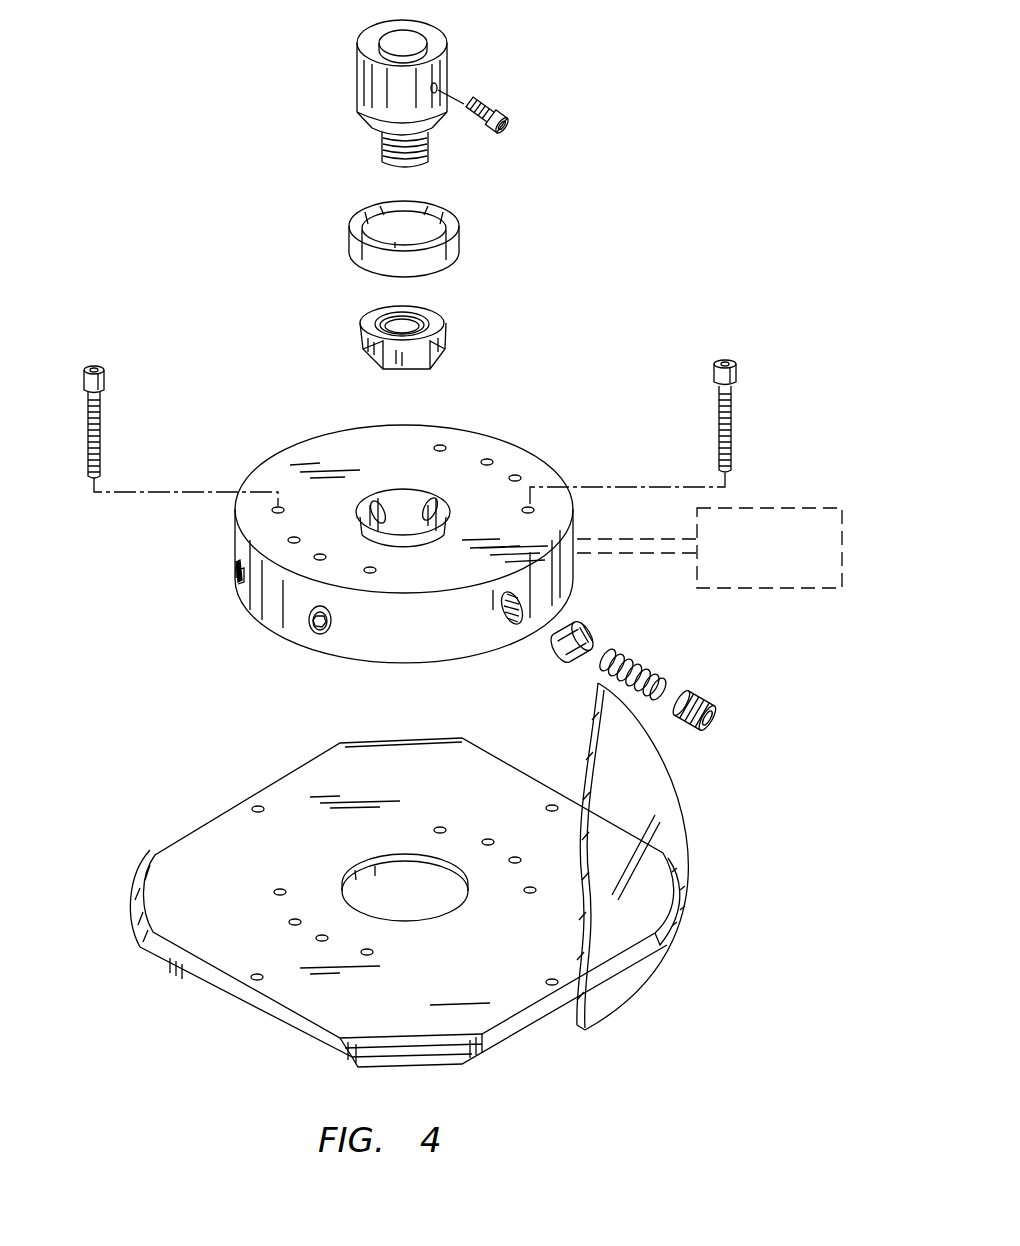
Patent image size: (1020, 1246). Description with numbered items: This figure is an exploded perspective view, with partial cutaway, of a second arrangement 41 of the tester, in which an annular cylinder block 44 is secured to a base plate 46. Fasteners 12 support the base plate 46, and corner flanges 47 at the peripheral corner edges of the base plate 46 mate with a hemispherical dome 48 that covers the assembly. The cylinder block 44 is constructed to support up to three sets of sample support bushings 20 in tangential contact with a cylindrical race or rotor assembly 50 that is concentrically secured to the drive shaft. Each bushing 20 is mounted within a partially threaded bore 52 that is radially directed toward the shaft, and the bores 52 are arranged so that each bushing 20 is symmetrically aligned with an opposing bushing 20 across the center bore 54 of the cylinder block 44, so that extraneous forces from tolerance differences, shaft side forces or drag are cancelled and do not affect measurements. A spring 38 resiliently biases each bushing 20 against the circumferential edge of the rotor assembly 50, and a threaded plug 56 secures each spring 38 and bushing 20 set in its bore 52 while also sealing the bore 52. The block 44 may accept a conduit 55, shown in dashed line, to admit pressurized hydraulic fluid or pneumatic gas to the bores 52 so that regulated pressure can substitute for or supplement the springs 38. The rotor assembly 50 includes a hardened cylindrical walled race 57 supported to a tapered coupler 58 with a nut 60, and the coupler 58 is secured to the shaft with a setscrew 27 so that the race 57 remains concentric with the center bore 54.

The fasteners 12 is at (100, 374).
The sample support bushing 20 is at (583, 628).
The setscrew 27 is at (505, 115).
The spring 38 is at (640, 662).
The arrangement 41 is at (200, 280).
The cylinder block 44 is at (268, 645).
The base plate 46 is at (222, 812).
The corner flanges 47 is at (130, 890).
The hemispherical dome 48 is at (667, 808).
The rotor assembly 50 is at (575, 224).
The threaded bore 52 is at (428, 504).
The center bore 54 is at (392, 492).
The conduit 55 is at (610, 539).
The threaded plug 56 is at (235, 570).
The race 57 is at (460, 228).
The tapered coupler 58 is at (450, 64).
The nut 60 is at (447, 325).